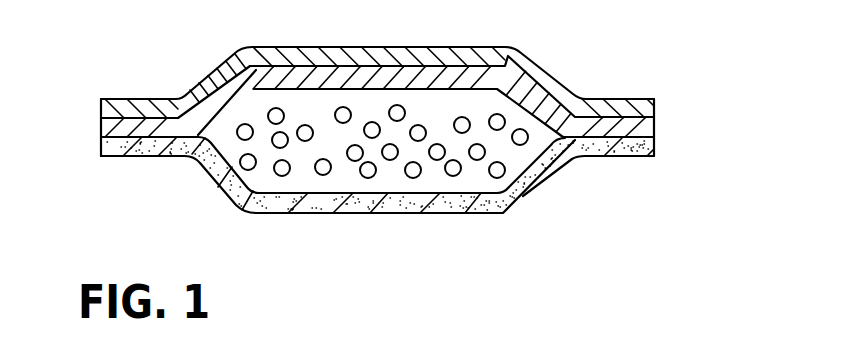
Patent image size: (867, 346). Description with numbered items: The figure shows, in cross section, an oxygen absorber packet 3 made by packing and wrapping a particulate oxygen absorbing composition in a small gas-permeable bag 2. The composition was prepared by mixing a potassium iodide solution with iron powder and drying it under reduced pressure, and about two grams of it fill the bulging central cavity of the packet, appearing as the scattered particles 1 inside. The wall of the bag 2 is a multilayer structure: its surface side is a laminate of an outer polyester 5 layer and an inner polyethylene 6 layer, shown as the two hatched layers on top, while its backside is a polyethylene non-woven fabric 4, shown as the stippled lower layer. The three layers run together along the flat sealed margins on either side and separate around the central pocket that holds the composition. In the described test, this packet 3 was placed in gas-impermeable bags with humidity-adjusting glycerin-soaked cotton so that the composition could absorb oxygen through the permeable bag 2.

The filler particles 1 is at (319, 172).
The gas-permeable bag 2 is at (663, 96).
The oxygen absorber packet 3 is at (115, 68).
The polyethylene non-woven fabric 4 is at (507, 203).
The polyester 5 is at (385, 60).
The polyethylene 6 is at (502, 75).